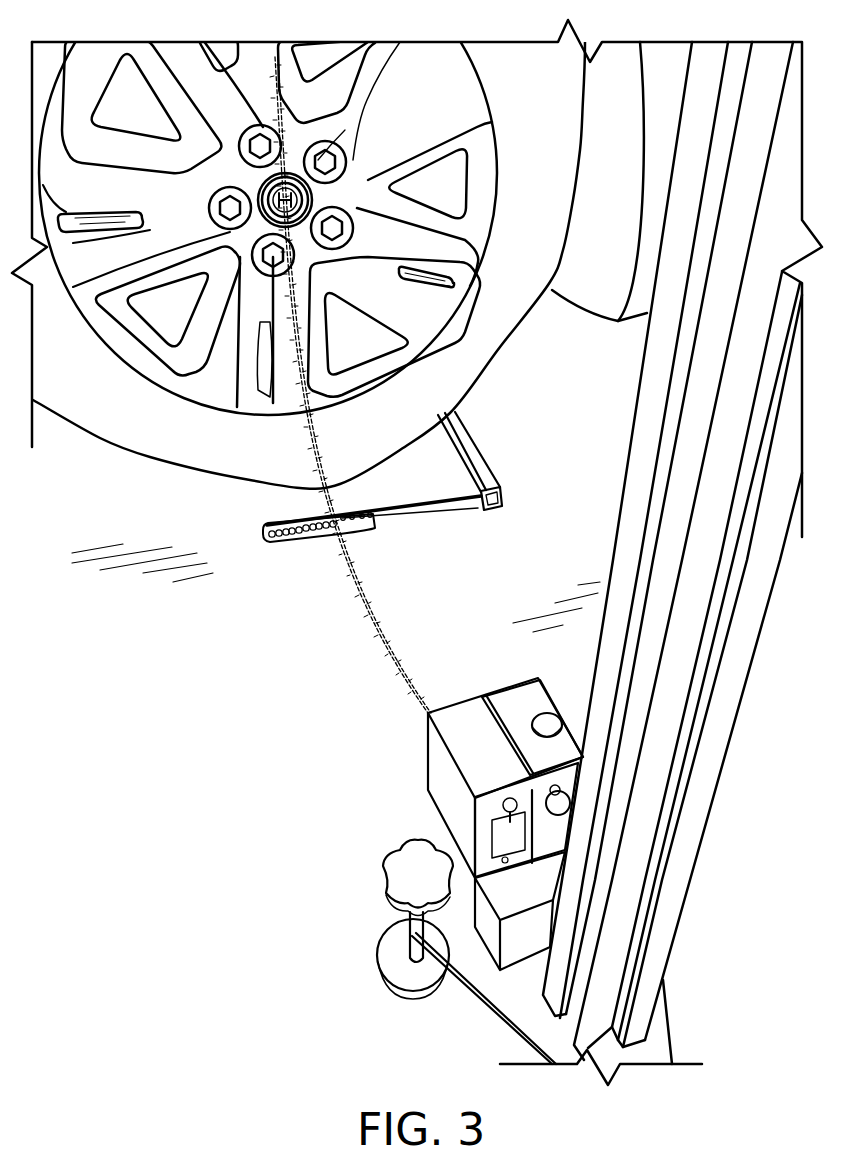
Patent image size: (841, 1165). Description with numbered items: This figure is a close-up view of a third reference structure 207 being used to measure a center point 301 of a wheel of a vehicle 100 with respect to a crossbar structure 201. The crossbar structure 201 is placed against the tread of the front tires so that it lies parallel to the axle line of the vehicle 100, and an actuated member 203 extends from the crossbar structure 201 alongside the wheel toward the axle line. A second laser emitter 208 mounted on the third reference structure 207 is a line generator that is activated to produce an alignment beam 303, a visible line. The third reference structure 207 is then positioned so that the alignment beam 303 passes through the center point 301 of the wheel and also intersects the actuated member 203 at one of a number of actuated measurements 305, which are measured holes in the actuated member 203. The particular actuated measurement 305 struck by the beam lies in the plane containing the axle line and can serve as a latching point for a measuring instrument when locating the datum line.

The vehicle 100 is at (583, 343).
The crossbar structure 201 is at (473, 457).
The actuated member 203 is at (425, 510).
The third reference structure 207 is at (690, 828).
The second laser emitter 208 is at (437, 768).
The center point 301 is at (300, 206).
The alignment beam 303 is at (385, 627).
The actuated measurement 305 is at (377, 530).